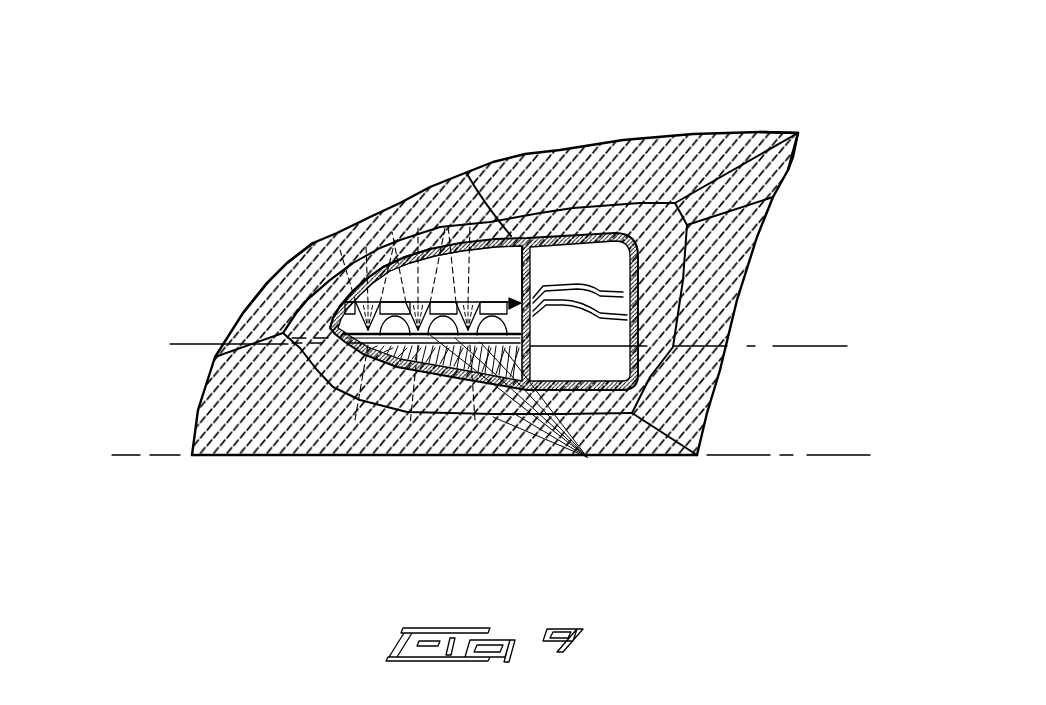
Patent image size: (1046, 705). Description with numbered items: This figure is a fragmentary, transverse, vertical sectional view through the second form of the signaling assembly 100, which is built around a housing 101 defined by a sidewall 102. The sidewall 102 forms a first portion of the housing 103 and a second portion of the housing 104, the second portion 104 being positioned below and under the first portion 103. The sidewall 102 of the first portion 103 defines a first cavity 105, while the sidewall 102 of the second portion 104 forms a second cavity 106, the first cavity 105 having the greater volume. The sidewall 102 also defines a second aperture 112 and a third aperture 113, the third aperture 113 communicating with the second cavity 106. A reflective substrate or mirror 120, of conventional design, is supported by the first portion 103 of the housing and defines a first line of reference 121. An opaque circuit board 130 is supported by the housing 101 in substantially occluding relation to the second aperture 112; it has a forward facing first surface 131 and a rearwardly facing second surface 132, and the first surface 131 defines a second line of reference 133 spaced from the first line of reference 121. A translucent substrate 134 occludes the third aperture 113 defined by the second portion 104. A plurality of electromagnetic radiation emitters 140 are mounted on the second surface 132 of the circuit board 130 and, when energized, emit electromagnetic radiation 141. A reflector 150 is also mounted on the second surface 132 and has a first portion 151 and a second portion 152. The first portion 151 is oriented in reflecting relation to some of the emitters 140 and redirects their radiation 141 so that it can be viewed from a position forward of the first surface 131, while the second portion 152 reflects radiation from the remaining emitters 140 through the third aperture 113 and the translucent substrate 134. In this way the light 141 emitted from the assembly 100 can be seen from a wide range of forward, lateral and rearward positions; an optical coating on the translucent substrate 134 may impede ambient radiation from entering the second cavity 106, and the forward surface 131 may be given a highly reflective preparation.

The signaling assembly 100 is at (741, 72).
The housing 101 is at (798, 133).
The sidewall 102 is at (603, 150).
The first portion of the housing 103 is at (260, 306).
The second portion of the housing 104 is at (657, 310).
The first cavity 105 is at (293, 270).
The second cavity 106 is at (523, 362).
The second aperture 112 is at (405, 370).
The third aperture 113 is at (447, 250).
The reflective substrate 120 is at (278, 458).
The first line of reference 121 is at (170, 455).
The opaque circuit board 130 is at (364, 356).
The first surface 131 is at (455, 378).
The second surface 132 is at (318, 303).
The second line of reference 133 is at (190, 343).
The translucent substrate 134 is at (377, 277).
The electromagnetic radiation emitters 140 is at (587, 457).
The electromagnetic radiation 141 is at (480, 303).
The reflector 150 is at (573, 235).
The first portion of the reflector 151 is at (537, 310).
The second portion of the reflector 152 is at (538, 247).